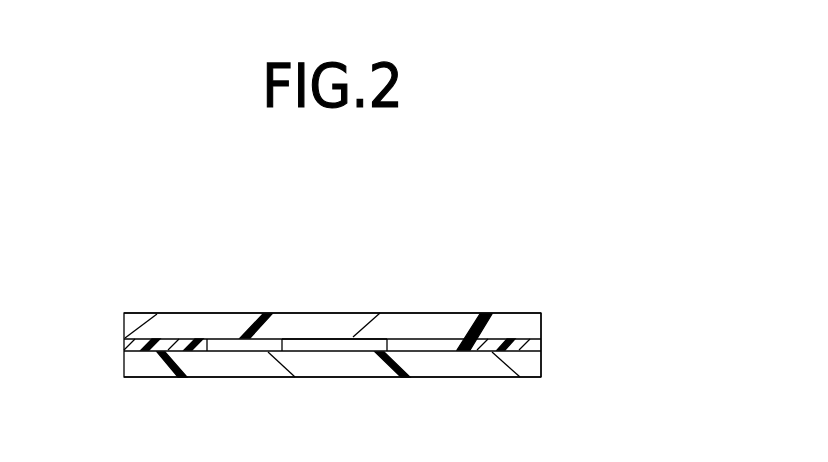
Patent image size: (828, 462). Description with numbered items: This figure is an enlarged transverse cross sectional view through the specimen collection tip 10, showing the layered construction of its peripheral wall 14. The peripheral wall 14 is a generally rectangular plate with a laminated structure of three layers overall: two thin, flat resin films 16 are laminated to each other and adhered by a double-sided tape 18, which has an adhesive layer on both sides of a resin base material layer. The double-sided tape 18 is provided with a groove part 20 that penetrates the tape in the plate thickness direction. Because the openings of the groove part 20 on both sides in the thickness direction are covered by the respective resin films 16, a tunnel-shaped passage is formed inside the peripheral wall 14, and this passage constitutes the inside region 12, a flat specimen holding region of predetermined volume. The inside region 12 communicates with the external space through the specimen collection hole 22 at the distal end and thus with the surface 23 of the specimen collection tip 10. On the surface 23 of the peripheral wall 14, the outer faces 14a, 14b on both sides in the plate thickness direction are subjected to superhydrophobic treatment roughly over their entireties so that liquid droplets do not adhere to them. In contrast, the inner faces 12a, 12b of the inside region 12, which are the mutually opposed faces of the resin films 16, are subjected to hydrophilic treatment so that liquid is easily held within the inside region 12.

The specimen collection tip 10 is at (590, 263).
The inside region 12 is at (356, 331).
The inner face 12a is at (316, 340).
The inner face 12b is at (375, 350).
The peripheral wall 14 is at (146, 302).
The outer face 14a is at (513, 313).
The outer face 14b is at (305, 377).
The resin film 16 is at (463, 325).
The double-sided tape 18 is at (165, 347).
The groove part 20 is at (207, 339).
The specimen collection hole 22 is at (282, 339).
The surface 23 is at (549, 331).